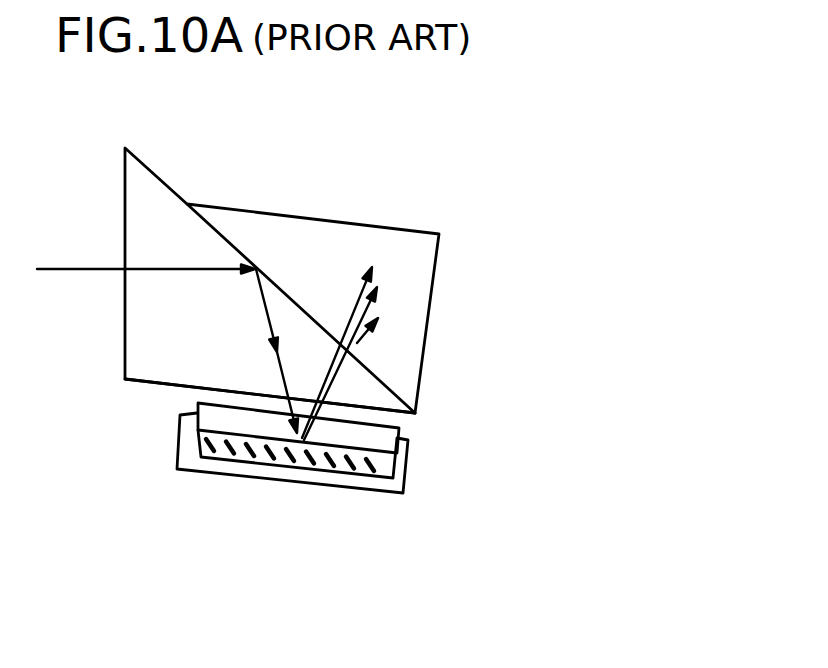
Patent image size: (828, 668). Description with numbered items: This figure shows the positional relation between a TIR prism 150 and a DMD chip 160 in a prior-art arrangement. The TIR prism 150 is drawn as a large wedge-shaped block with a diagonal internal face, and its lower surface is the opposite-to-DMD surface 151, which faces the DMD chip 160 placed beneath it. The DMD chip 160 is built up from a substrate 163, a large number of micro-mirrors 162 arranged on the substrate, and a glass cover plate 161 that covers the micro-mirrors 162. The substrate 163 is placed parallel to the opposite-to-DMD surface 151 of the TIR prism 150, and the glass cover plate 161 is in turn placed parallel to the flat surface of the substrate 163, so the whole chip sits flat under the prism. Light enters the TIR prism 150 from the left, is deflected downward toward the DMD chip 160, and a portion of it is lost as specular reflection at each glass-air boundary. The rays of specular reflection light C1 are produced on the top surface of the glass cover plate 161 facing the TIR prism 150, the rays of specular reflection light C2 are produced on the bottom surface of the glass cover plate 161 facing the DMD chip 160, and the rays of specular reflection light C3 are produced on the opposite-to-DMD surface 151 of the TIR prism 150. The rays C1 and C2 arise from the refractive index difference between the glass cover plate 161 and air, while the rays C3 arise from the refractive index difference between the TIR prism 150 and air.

The TIR prism 150 is at (220, 204).
The opposite-to-DMD surface 151 is at (126, 380).
The DMD chip 160 is at (341, 478).
The glass cover plate 161 is at (399, 428).
The micro-mirror 162 is at (377, 466).
The substrate 163 is at (363, 494).
The rays of specular reflection light C1 is at (372, 302).
The rays of specular reflection light C2 is at (371, 343).
The rays of specular reflection light C3 is at (362, 287).